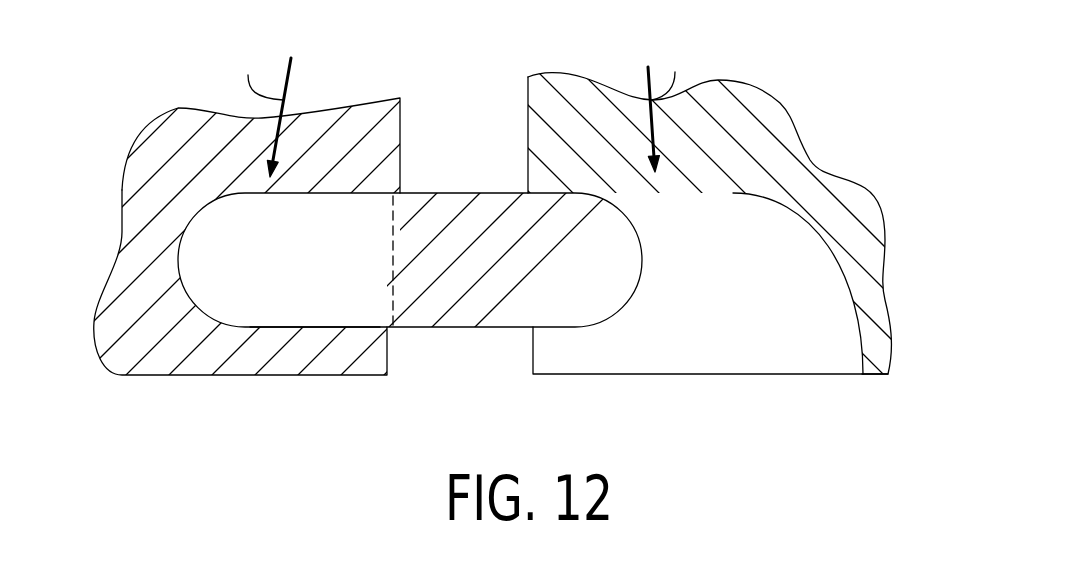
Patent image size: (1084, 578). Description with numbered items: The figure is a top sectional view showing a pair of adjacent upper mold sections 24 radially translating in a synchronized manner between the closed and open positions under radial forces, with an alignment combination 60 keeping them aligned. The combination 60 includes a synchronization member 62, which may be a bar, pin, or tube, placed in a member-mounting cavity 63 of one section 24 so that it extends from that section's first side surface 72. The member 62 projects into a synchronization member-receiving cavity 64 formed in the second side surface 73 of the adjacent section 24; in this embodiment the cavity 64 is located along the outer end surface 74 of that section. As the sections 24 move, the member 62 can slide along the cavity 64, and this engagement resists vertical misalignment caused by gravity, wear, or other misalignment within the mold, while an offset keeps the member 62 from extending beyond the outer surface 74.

The alignment combination 60 is at (542, 231).
The upper mold section 24 is at (145, 162).
The synchronization member 62 is at (248, 307).
The member-mounting cavity 63 is at (310, 328).
The first side surface 72 is at (402, 133).
The second side surface 73 is at (528, 164).
The synchronization member-receiving cavity 64 is at (857, 295).
The outer end surface 74 is at (870, 375).